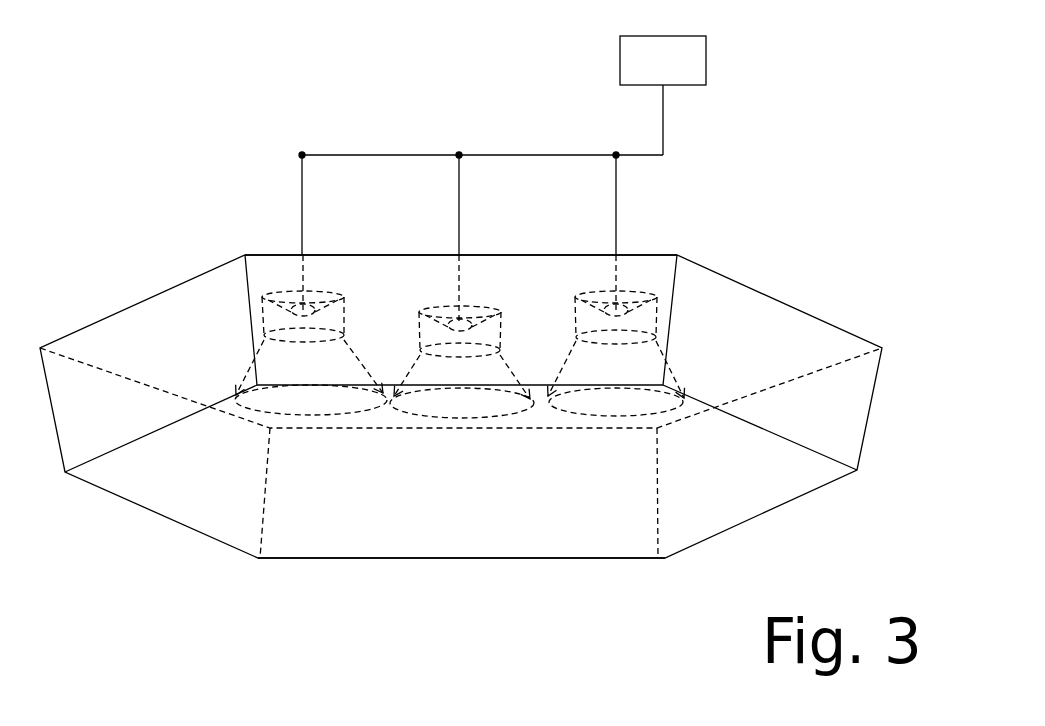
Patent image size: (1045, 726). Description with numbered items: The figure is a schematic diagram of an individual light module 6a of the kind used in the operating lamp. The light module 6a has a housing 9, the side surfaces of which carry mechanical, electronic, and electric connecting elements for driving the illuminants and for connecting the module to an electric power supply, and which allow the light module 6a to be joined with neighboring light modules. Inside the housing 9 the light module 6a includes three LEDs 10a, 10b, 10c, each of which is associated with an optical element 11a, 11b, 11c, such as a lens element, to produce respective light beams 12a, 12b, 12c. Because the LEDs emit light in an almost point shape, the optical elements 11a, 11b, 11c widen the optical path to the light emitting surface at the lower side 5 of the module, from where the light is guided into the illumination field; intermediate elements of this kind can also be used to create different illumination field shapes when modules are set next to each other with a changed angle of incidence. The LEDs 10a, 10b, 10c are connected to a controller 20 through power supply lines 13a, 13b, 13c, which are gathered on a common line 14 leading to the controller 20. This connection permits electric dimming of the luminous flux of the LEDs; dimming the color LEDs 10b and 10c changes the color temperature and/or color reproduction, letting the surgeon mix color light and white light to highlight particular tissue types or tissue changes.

The lower side 5 is at (514, 504).
The light module 6a is at (678, 226).
The housing 9 is at (793, 330).
The LED 10a is at (300, 292).
The LED 10b is at (463, 308).
The LED 10c is at (613, 295).
The optical element 11a is at (308, 402).
The optical element 11b is at (460, 405).
The optical element 11c is at (618, 404).
The light beam 12a is at (262, 348).
The light beam 12b is at (394, 397).
The light beam 12c is at (680, 400).
The power supply line 13a is at (302, 182).
The power supply line 13b is at (459, 185).
The power supply line 13c is at (616, 185).
The bus line 14 is at (352, 155).
The controller 20 is at (708, 60).